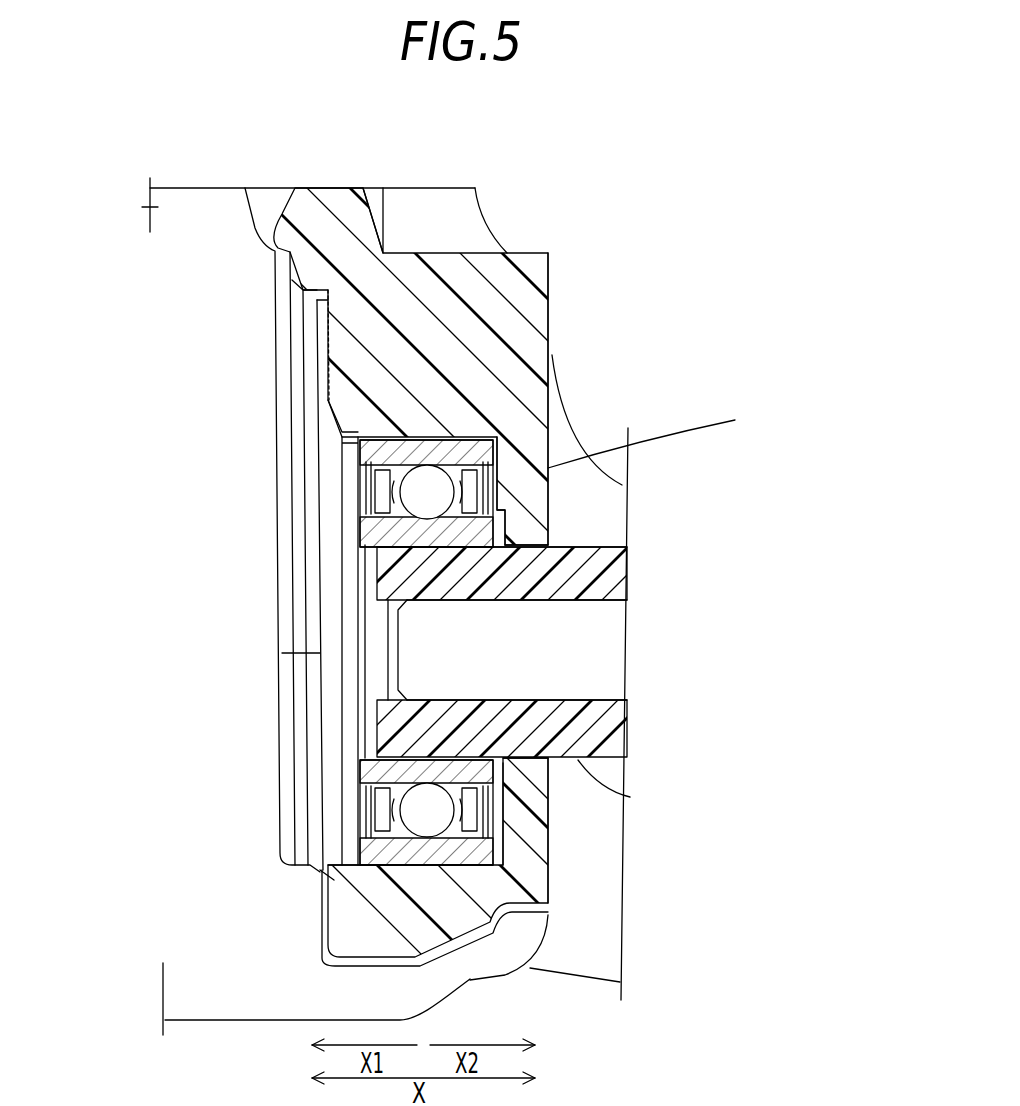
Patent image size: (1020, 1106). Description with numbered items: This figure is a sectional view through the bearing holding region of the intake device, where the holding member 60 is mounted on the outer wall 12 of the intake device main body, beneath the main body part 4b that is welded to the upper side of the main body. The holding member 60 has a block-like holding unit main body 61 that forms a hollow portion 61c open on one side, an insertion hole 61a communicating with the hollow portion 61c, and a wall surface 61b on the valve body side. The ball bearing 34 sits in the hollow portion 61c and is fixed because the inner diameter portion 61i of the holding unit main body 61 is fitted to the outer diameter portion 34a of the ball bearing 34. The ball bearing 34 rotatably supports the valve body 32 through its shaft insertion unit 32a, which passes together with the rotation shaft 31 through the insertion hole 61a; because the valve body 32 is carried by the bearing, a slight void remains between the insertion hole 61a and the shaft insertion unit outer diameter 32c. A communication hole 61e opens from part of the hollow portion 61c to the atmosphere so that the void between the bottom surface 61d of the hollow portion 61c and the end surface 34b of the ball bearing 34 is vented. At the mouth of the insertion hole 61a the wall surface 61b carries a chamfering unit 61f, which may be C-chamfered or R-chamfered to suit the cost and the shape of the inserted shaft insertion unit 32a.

The main body part 4b is at (150, 206).
The holding member 60 is at (443, 246).
The holding unit main body 61 is at (517, 285).
The insertion hole 61a is at (555, 576).
The wall surface 61b is at (548, 505).
The hollow portion 61c is at (330, 704).
The bottom surface 61d is at (548, 757).
The communication hole 61e is at (325, 442).
The chamfering unit 61f is at (520, 542).
The inner diameter portion 61i is at (353, 863).
The ball bearing 34 is at (548, 425).
The outer diameter portion 34a is at (548, 342).
The end surface 34b is at (663, 435).
The valve body 32 is at (632, 710).
The shaft insertion unit 32a is at (612, 595).
The shaft insertion unit outer diameter 32c is at (548, 793).
The rotation shaft 31 is at (605, 637).
The outer wall 12 is at (470, 967).